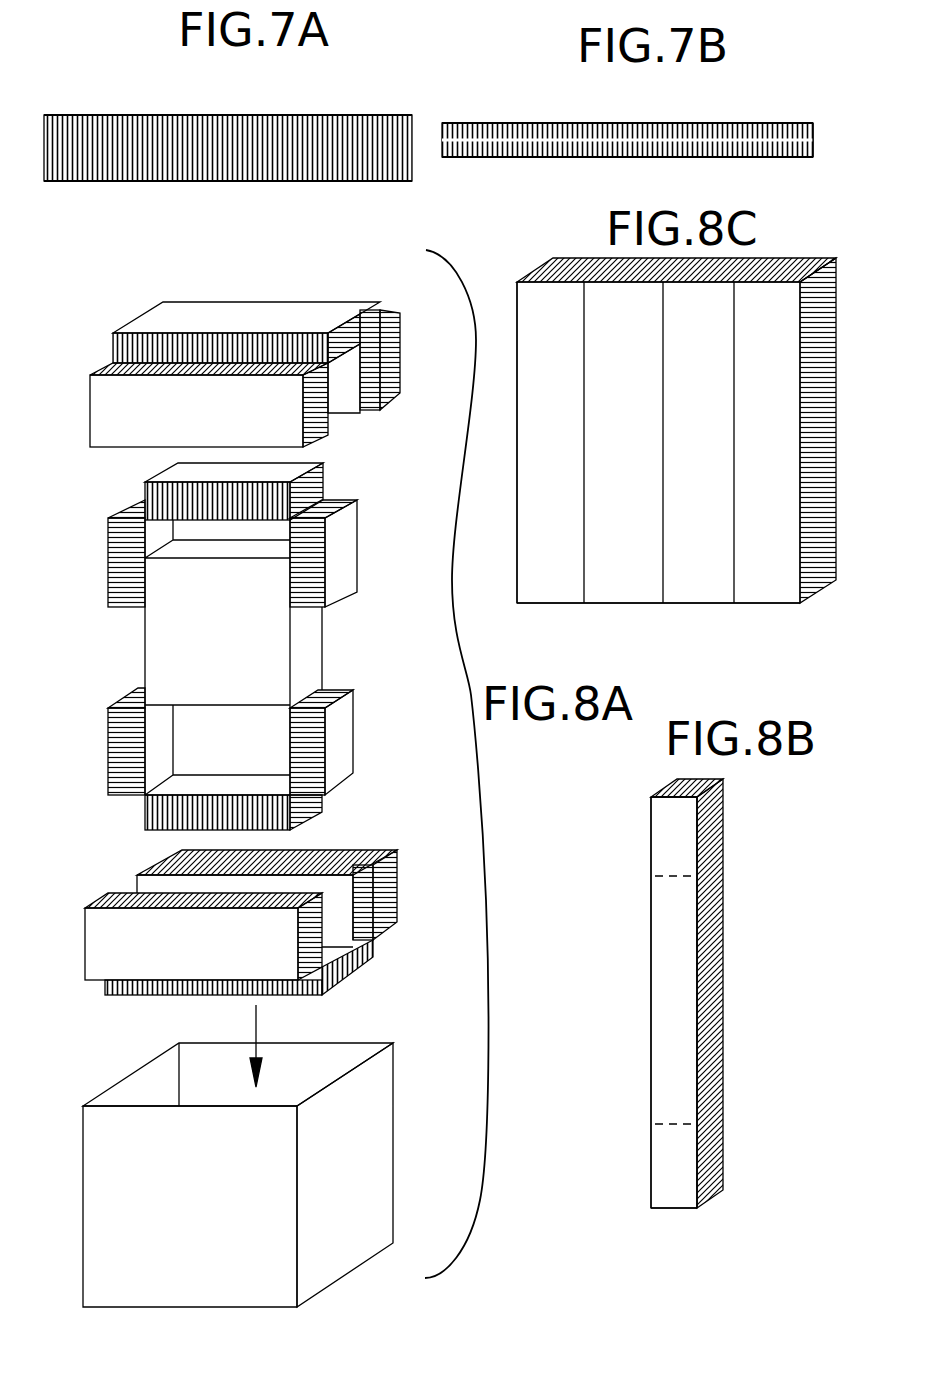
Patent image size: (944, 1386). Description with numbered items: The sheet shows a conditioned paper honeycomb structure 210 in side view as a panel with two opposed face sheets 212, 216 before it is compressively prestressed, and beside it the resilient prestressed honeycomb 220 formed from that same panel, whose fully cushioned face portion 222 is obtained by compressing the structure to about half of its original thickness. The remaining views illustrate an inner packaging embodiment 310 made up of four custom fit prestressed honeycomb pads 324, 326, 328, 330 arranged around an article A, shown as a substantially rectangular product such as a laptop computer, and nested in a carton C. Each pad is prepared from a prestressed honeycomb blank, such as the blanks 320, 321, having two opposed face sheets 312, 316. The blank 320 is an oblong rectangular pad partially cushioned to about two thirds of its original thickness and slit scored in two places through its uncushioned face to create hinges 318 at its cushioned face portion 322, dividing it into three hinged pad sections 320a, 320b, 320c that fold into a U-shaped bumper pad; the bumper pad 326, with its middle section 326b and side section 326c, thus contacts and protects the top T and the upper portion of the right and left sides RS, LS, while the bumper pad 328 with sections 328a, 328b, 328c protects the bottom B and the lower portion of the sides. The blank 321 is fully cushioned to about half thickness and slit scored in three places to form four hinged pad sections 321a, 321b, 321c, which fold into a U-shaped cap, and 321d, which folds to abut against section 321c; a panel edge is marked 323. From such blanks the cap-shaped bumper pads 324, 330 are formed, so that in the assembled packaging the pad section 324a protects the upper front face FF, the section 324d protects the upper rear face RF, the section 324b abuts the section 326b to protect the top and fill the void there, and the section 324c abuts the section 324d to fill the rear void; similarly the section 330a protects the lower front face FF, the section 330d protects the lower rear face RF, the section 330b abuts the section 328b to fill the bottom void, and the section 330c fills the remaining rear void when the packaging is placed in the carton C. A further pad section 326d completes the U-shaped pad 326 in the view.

In FIG. 7A, the conditioned honeycomb structure 210 is at (99, 106).
In FIG. 7A, the face sheet 212 is at (342, 183).
In FIG. 7B, the face sheet 212 is at (745, 158).
In FIG. 7A, the face sheet 216 is at (369, 116).
In FIG. 7B, the face sheet 216 is at (595, 122).
In FIG. 7B, the prestressed honeycomb 220 is at (492, 110).
In FIG. 7B, the fully cushioned face portion 222 is at (813, 136).
In FIG. 8A, the inner packaging embodiment 310 is at (66, 372).
In FIG. 8C, the face sheet 312 is at (838, 530).
In FIG. 8B, the face sheet 312 is at (660, 1060).
In FIG. 8A, the face sheet 312 is at (220, 784).
In FIG. 8C, the face sheet 316 is at (772, 590).
In FIG. 8B, the face sheet 316 is at (722, 1028).
In FIG. 8A, the face sheet 316 is at (145, 498).
In FIG. 8C, the hinge 318 is at (584, 458).
In FIG. 8B, the hinge 318 is at (655, 876).
In FIG. 8A, the hinge 318 is at (323, 500).
In FIG. 8B, the prestressed honeycomb blank 320 is at (640, 957).
In FIG. 8B, the hinged pad section 320a is at (673, 1210).
In FIG. 8B, the hinged pad section 320b is at (650, 1010).
In FIG. 8B, the hinged pad section 320c is at (651, 812).
In FIG. 8C, the prestressed honeycomb blank 321 is at (506, 503).
In FIG. 8C, the prestressed honeycomb pad section 321a is at (548, 585).
In FIG. 8C, the prestressed honeycomb pad section 321b is at (618, 585).
In FIG. 8C, the prestressed honeycomb pad section 321c is at (708, 585).
In FIG. 8C, the prestressed honeycomb pad section 321d is at (790, 570).
In FIG. 8B, the partially cushioned face portion 322 is at (722, 948).
In FIG. 8A, the partially cushioned face portion 322 is at (135, 537).
In FIG. 8C, the panel edge 323 is at (837, 313).
In FIG. 8A, the prestressed honeycomb bumper pad 324 is at (416, 353).
In FIG. 8A, the pad section 324a is at (105, 418).
In FIG. 8A, the pad section 324b is at (182, 304).
In FIG. 8A, the pad section 324c is at (400, 332).
In FIG. 8A, the pad section 324d is at (347, 396).
In FIG. 8A, the prestressed honeycomb bumper pad 326 is at (368, 547).
In FIG. 8A, the hinged pad section 326b is at (300, 466).
In FIG. 8A, the hinged pad section 326c is at (108, 563).
In FIG. 8A, the right strip of middle frame 326d is at (353, 571).
In FIG. 8A, the prestressed honeycomb bumper pad 328 is at (95, 784).
In FIG. 8A, the hinged pad section 328a is at (345, 732).
In FIG. 8A, the hinged pad section 328b is at (157, 832).
In FIG. 8A, the hinged pad section 328c is at (108, 735).
In FIG. 8A, the prestressed honeycomb bumper pad 330 is at (410, 914).
In FIG. 8A, the pad section 330a is at (98, 953).
In FIG. 8A, the pad section 330b is at (360, 972).
In FIG. 8A, the pad section 330c is at (393, 882).
In FIG. 8A, the pad section 330d is at (348, 887).
In FIG. 8A, the article A is at (235, 630).
In FIG. 8A, the bottom B is at (196, 706).
In FIG. 8A, the carton C is at (377, 1158).
In FIG. 8A, the top T is at (214, 552).
In FIG. 8A, the front face FF is at (242, 688).
In FIG. 8A, the left side LS is at (143, 650).
In FIG. 8A, the right side RS is at (317, 640).
In FIG. 8A, the rear face RF is at (322, 660).